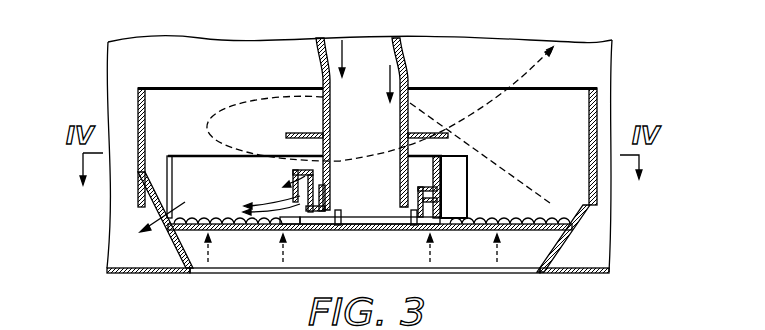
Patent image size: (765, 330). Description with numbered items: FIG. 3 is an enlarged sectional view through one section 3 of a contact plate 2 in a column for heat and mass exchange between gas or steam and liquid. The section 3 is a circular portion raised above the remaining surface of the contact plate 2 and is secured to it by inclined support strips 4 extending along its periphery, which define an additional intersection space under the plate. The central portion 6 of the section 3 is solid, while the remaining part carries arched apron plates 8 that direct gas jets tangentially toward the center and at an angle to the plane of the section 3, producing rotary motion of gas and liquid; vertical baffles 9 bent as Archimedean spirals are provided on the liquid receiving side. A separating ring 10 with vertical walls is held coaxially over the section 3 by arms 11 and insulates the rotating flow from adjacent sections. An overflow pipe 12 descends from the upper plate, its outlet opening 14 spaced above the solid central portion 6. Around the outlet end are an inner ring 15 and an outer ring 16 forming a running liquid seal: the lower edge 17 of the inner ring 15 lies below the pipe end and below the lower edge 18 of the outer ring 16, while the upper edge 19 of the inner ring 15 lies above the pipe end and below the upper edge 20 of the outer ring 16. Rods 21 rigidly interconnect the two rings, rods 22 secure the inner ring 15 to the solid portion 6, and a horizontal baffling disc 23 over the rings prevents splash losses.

The contact plate 2 is at (132, 276).
The section 3 is at (240, 240).
The support strip 4 is at (172, 238).
The central portion 6 is at (369, 232).
The arched apron plate 8 is at (207, 216).
The vertical baffle 9 is at (183, 153).
The separating ring 10 is at (595, 112).
The arm 11 is at (142, 208).
The overflow pipe 12 is at (407, 75).
The outlet opening 14 is at (408, 163).
The inner ring 15 is at (425, 214).
The outer ring 16 is at (289, 192).
The lower edge of inner ring 17 is at (353, 218).
The lower edge of outer ring 18 is at (305, 230).
The upper edge of inner ring 19 is at (328, 186).
The upper edge of outer ring 20 is at (302, 168).
The rod 21 is at (410, 228).
The rod 22 is at (401, 168).
The baffling disc 23 is at (300, 132).